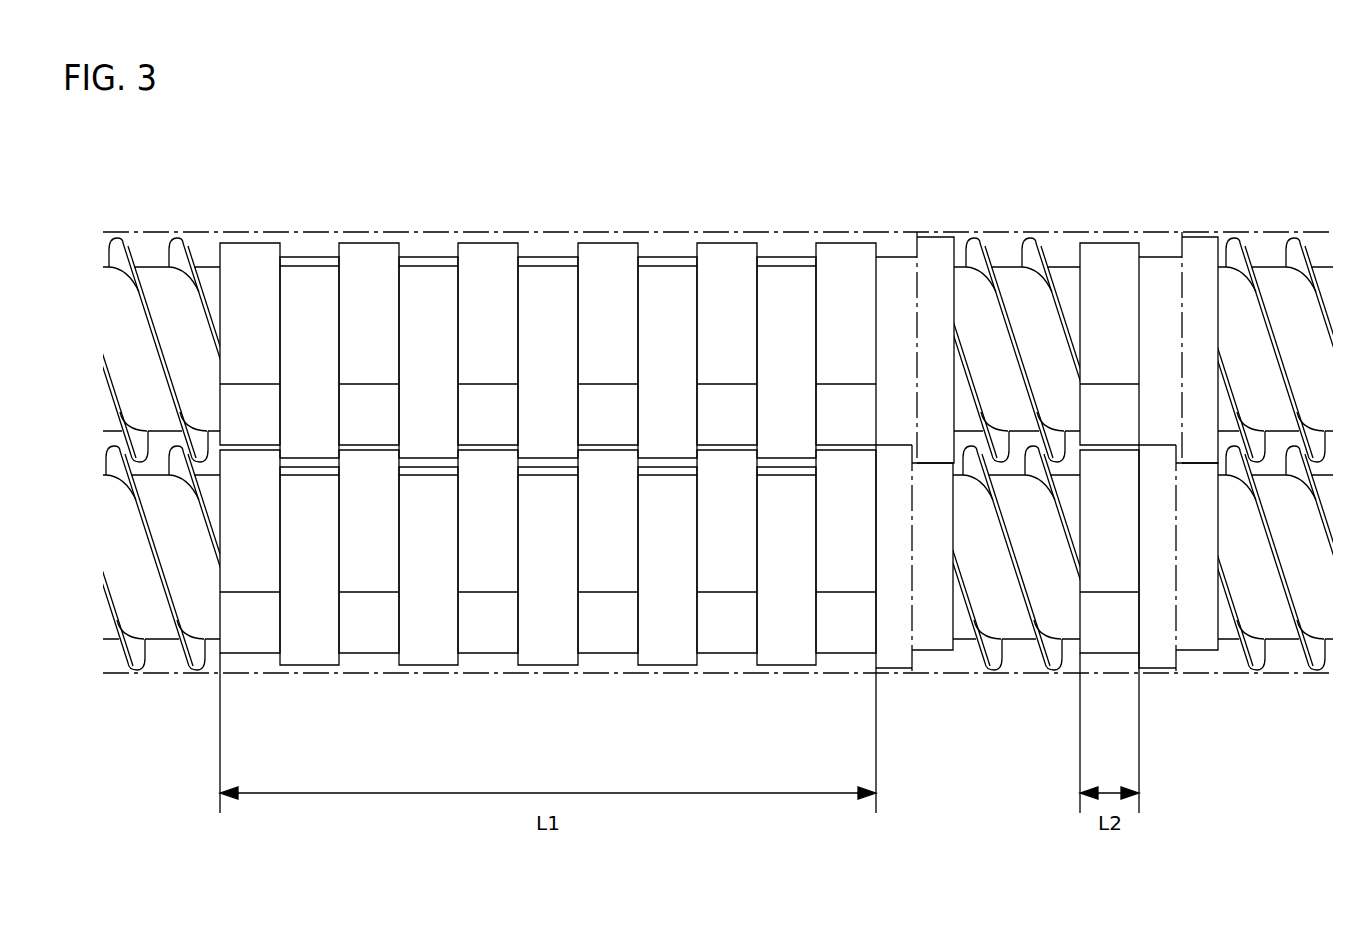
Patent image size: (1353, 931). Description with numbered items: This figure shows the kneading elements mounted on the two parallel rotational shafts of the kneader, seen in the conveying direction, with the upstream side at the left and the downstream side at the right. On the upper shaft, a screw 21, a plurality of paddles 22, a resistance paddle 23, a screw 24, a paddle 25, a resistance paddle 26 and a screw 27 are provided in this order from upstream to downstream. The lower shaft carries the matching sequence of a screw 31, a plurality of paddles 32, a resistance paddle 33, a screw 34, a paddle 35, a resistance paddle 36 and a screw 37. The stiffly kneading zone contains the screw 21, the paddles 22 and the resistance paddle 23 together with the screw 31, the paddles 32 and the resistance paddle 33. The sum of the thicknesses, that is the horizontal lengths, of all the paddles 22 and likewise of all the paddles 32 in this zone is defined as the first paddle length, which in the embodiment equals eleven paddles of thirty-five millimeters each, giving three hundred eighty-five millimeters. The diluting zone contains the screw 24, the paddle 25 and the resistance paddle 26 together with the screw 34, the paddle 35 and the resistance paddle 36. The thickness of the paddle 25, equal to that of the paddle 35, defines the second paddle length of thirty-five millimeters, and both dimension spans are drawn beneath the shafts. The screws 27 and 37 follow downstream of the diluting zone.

The screw 21 is at (147, 246).
The paddles 22 is at (251, 256).
The resistance paddle 23 is at (900, 257).
The screw 24 is at (1007, 267).
The paddle 25 is at (1113, 252).
The resistance paddle 26 is at (1160, 257).
The screw 27 is at (1268, 267).
The screw 31 is at (172, 655).
The paddles 32 is at (253, 645).
The resistance paddle 33 is at (934, 652).
The screw 34 is at (1027, 643).
The paddle 35 is at (1113, 643).
The resistance paddle 36 is at (1197, 650).
The screw 37 is at (1290, 643).